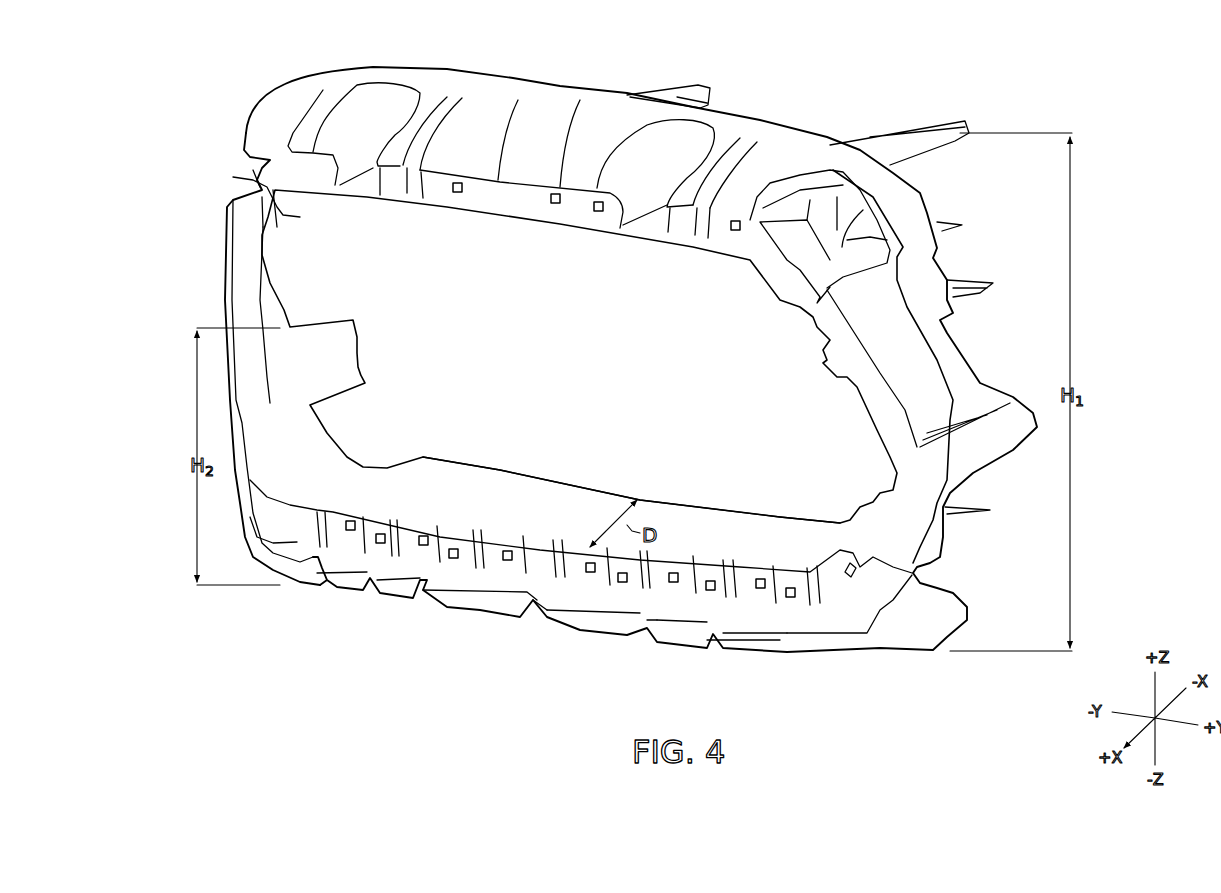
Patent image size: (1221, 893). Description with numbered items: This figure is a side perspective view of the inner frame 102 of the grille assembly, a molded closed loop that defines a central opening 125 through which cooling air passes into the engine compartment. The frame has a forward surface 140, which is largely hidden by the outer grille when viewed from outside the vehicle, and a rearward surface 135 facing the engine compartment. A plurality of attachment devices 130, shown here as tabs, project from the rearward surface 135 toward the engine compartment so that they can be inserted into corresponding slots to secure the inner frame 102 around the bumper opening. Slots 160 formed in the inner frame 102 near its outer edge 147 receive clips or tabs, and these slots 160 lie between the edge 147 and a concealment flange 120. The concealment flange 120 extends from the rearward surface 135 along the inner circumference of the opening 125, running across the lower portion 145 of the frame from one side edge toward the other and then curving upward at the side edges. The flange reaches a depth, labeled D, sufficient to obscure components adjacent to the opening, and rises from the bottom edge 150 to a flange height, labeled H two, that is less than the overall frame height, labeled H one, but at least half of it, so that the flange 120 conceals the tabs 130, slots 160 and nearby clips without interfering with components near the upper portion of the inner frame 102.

The inner frame 102 is at (810, 93).
The concealment flange 120 is at (482, 467).
The central opening 125 is at (376, 297).
The attachment devices 130 is at (706, 88).
The rearward surface 135 is at (587, 86).
The forward surface 140 is at (577, 220).
The lower portion 145 is at (350, 612).
The outer edge 147 is at (212, 305).
The bottom edge 150 is at (515, 617).
The slots 160 is at (462, 182).